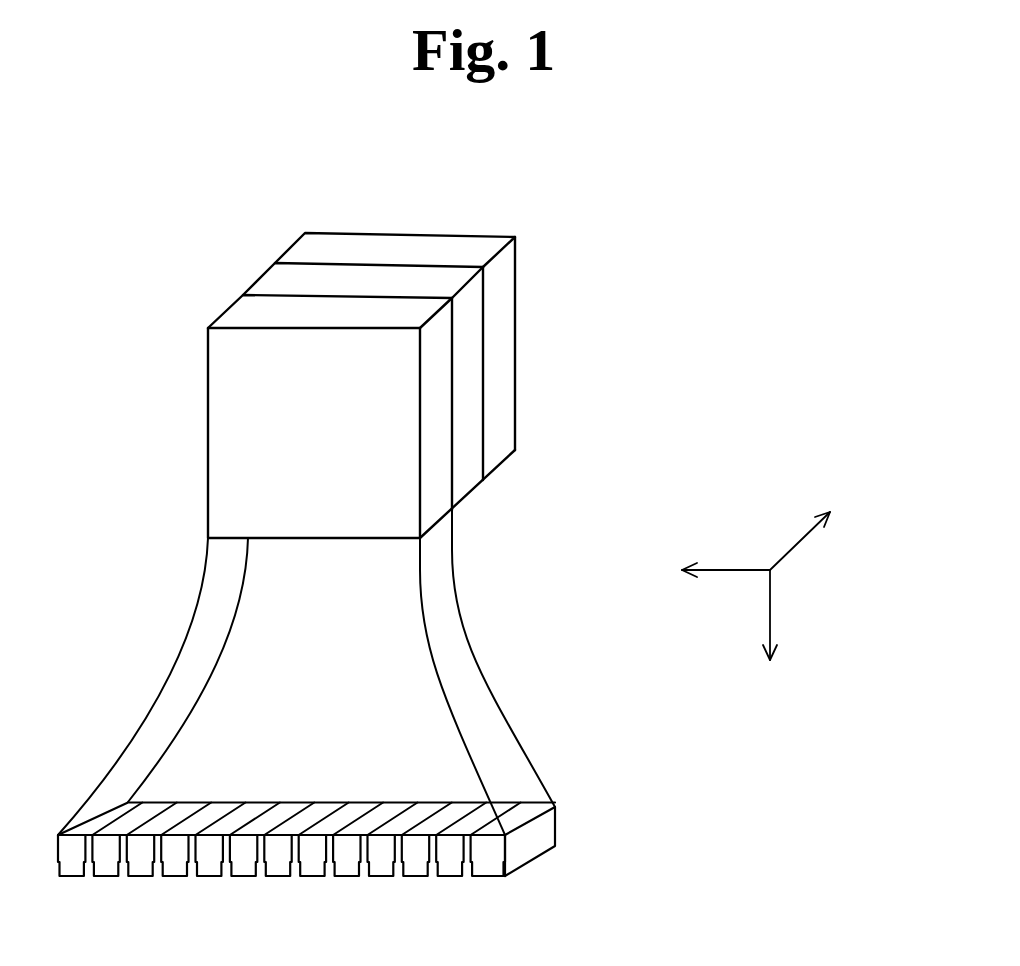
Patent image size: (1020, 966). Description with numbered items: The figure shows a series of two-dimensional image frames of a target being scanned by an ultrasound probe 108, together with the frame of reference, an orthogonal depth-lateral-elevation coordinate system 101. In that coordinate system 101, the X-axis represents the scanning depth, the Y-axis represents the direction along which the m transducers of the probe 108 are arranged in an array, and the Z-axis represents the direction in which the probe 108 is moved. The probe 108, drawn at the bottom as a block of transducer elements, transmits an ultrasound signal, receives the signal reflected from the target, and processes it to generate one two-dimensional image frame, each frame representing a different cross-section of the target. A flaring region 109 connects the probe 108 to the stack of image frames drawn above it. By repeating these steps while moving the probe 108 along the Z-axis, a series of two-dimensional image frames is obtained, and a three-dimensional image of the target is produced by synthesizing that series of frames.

The orthogonal depth-lateral-elevation (X-Y-Z) coordinate system 101 is at (808, 583).
The probe 108 is at (354, 791).
The horn 109 is at (162, 690).